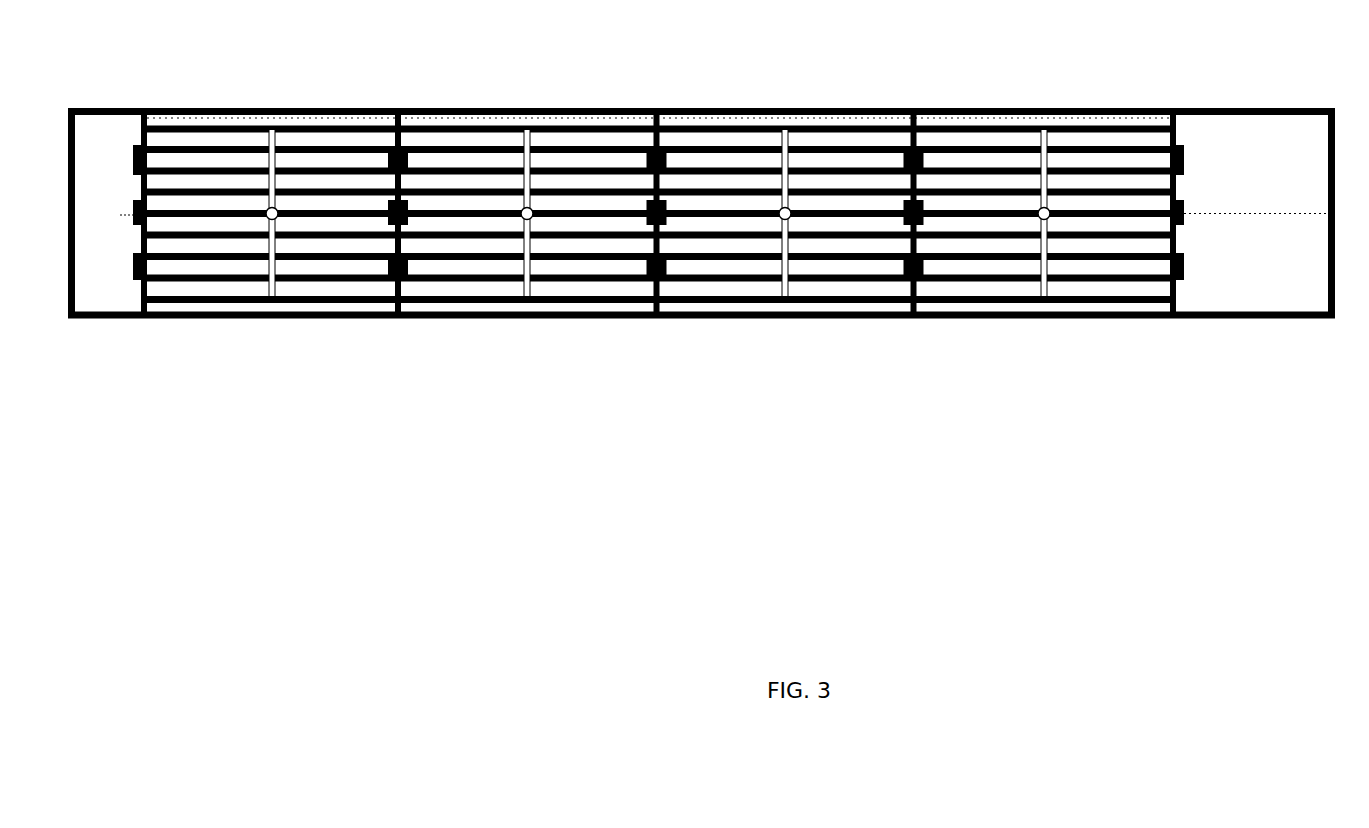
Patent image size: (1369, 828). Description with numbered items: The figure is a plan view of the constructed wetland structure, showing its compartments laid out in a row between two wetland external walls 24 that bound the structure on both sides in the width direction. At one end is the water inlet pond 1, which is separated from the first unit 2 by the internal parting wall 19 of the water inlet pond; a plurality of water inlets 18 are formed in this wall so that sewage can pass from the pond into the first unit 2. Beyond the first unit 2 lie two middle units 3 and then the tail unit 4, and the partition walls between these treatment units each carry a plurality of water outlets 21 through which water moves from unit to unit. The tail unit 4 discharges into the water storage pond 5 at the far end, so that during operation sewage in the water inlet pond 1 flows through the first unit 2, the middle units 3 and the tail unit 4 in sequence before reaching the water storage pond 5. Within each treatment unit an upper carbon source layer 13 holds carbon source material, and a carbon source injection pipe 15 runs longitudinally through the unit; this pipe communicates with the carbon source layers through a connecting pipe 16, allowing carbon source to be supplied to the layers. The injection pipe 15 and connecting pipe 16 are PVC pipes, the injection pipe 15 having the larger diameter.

The water inlet pond 1 is at (88, 133).
The first unit 2 is at (212, 120).
The middle unit 3 is at (460, 120).
The tail unit 4 is at (1003, 122).
The water storage pond 5 is at (1252, 138).
The upper carbon source layer 13 is at (200, 122).
The carbon source injection pipe 15 is at (281, 206).
The connecting pipe 16 is at (274, 148).
The water inlet 18 is at (136, 198).
The internal parting wall of water inlet pond 19 is at (140, 247).
The water outlet 21 is at (407, 148).
The wetland external wall 24 is at (762, 104).